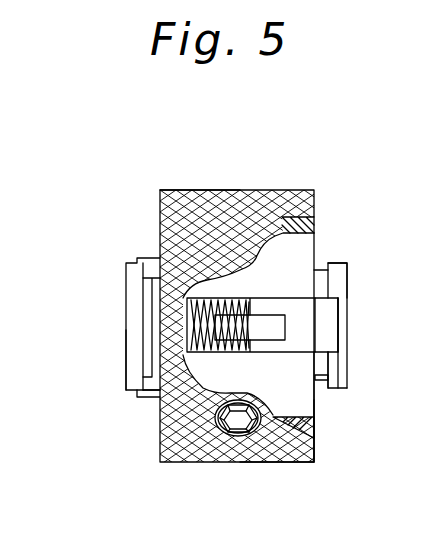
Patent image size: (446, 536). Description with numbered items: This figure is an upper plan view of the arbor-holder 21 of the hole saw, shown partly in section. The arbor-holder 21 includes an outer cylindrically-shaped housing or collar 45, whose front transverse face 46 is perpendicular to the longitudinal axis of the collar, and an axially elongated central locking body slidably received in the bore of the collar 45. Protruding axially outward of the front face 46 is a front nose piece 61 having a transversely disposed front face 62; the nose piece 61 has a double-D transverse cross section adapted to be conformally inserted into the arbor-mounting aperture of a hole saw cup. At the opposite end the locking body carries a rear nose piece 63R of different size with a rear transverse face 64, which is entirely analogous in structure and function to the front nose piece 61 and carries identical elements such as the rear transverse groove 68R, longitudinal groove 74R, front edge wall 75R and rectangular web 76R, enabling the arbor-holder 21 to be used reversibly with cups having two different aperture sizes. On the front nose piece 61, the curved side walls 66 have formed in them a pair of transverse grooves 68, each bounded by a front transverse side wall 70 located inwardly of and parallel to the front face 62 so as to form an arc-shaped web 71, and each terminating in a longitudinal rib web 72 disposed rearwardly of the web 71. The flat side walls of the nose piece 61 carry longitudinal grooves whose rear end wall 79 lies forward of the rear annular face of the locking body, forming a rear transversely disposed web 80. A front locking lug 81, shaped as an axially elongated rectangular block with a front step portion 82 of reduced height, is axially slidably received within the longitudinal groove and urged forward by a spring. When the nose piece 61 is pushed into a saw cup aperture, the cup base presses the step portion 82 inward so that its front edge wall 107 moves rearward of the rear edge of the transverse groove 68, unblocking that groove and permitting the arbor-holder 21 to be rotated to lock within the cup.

The arbor-holder 21 is at (236, 168).
The collar 45 is at (175, 172).
The front transverse face 46 is at (315, 450).
The front nose piece 61 is at (358, 295).
The front face 62 is at (348, 368).
The left clamp member 63R is at (113, 292).
The rear transverse face 64 is at (128, 368).
The curved side walls 66 is at (332, 264).
The transverse grooves 68 is at (322, 398).
The recess 68R is at (141, 324).
The front transverse side wall 70 is at (319, 270).
The arc-shaped web 71 is at (343, 264).
The longitudinal rib web 72 is at (325, 358).
The tab 74R is at (144, 398).
The lower tab 75R is at (135, 399).
The bar 76R is at (128, 346).
The rear end wall 79 is at (206, 358).
The rear transversely disposed web 80 is at (182, 300).
The front locking lug 81 is at (295, 310).
The front step portion 82 is at (330, 325).
The front edge wall 107 is at (340, 343).